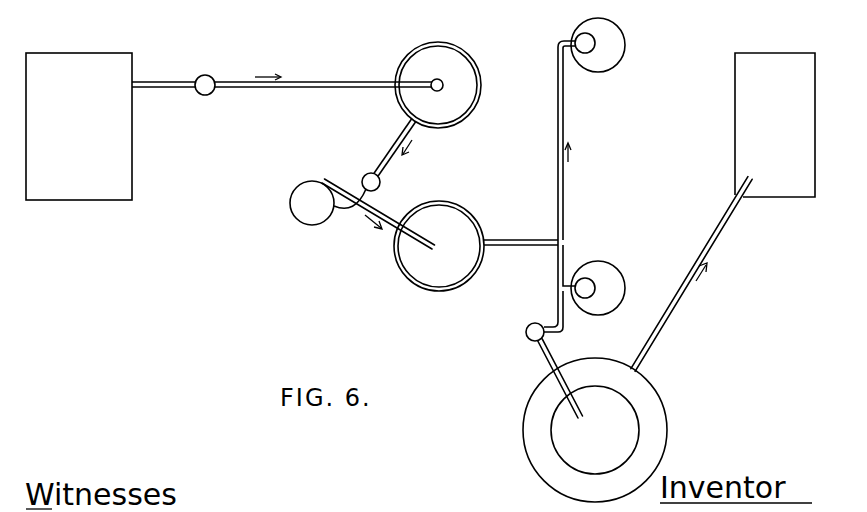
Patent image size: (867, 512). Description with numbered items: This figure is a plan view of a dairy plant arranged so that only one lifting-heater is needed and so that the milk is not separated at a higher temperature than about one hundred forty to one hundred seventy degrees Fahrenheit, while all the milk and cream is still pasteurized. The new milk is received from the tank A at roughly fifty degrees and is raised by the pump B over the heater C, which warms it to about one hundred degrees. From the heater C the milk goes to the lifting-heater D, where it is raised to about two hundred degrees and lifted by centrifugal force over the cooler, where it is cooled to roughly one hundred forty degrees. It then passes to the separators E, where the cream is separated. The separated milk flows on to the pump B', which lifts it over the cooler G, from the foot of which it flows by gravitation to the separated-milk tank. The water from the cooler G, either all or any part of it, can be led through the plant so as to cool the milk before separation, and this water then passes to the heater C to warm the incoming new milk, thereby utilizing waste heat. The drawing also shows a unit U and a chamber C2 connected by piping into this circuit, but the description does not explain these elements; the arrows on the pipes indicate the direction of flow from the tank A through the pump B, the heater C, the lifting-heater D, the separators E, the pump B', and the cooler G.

The tank A is at (79, 126).
The pump B is at (282, 73).
The heater U is at (438, 85).
The lifting-heater D is at (353, 172).
The heater C is at (440, 235).
The separators E is at (584, 175).
The pump B' is at (550, 362).
The cooler G is at (595, 430).
The chamber C2 is at (723, 212).